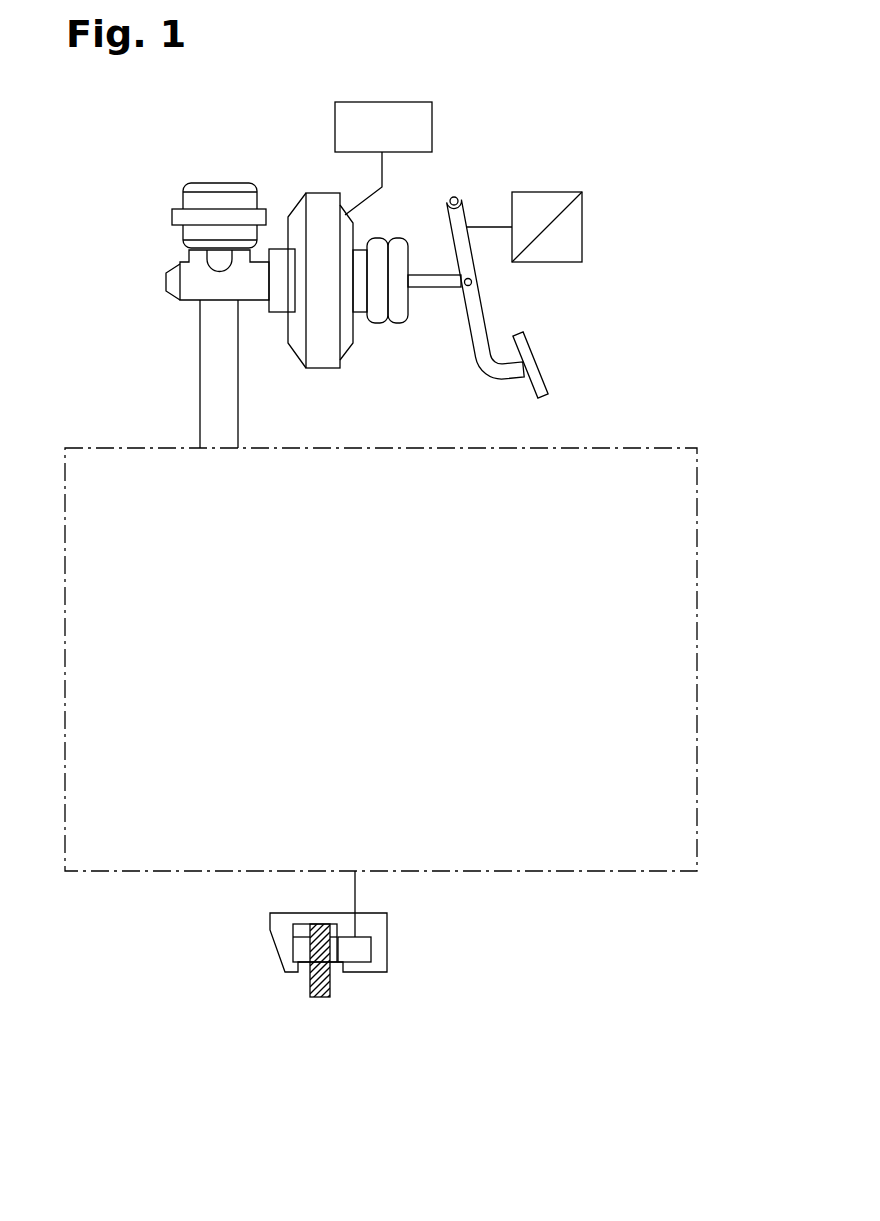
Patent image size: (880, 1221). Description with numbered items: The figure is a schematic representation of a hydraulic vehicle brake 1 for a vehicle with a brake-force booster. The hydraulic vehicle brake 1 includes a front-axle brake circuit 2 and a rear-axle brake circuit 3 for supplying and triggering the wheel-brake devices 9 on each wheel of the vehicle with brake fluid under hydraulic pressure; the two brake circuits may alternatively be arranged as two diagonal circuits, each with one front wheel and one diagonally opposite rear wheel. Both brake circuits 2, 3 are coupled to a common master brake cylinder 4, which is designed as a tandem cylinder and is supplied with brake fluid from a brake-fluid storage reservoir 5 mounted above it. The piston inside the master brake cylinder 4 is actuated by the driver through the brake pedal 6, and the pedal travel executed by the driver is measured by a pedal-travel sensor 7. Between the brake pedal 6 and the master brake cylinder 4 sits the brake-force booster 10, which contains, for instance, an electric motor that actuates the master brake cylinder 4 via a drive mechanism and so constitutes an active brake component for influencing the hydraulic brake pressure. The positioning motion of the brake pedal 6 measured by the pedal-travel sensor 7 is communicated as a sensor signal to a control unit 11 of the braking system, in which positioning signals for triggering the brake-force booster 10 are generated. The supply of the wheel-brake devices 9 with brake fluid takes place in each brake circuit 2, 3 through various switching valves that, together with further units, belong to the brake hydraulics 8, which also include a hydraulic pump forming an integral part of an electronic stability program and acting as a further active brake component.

The hydraulic vehicle brake 1 is at (552, 117).
The front-axle brake circuit 2 is at (188, 405).
The rear-axle brake circuit 3 is at (250, 405).
The master brake cylinder 4 is at (183, 281).
The brake-fluid storage reservoir 5 is at (186, 199).
The brake pedal 6 is at (542, 367).
The pedal-travel sensor 7 is at (584, 228).
The brake hydraulics 8 is at (698, 647).
The wheel-brake device 9 is at (357, 1002).
The brake-force booster 10 is at (343, 353).
The control unit 11 is at (335, 124).